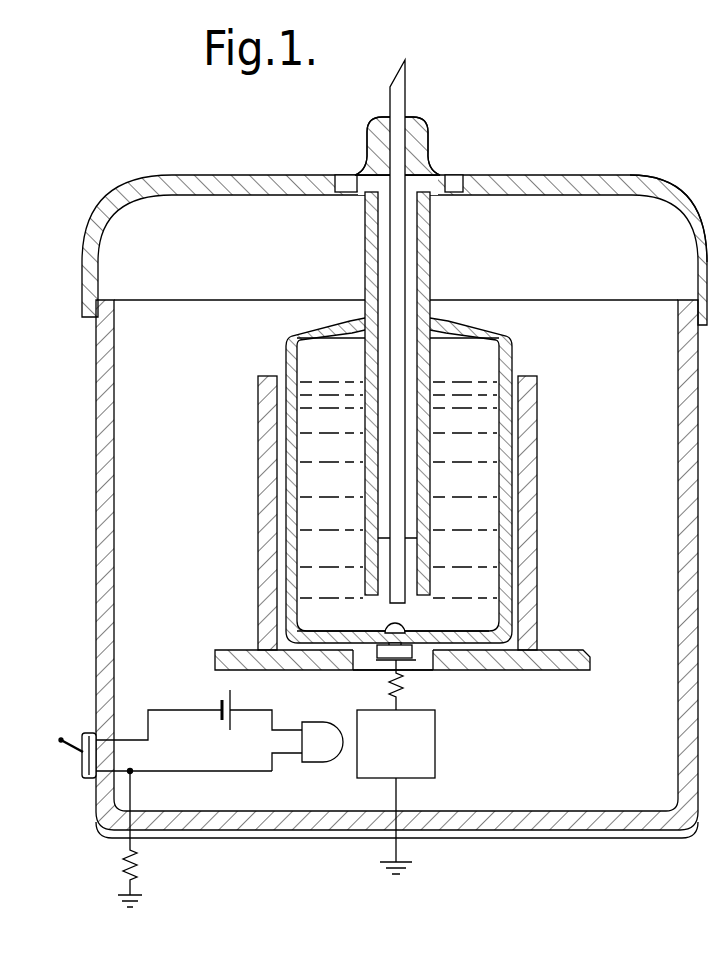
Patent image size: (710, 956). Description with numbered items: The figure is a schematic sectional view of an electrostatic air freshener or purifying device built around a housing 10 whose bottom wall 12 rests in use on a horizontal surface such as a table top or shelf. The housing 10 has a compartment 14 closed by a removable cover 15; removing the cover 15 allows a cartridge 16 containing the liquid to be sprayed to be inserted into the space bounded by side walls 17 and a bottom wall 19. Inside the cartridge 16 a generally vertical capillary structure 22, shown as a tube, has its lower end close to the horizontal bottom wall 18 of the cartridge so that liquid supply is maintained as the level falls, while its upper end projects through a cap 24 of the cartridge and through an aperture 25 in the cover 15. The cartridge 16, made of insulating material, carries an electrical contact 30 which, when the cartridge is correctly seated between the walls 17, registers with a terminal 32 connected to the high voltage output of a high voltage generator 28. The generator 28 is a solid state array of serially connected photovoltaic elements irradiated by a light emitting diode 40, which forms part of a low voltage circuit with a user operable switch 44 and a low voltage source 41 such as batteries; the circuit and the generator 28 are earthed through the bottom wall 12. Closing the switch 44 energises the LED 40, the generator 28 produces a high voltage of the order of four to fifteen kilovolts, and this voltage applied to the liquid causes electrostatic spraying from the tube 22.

The housing 10 is at (88, 485).
The bottom wall 12 is at (563, 817).
The compartment 14 is at (248, 226).
The cover 15 is at (618, 178).
The cartridge 16 is at (462, 318).
The side walls 17 is at (258, 518).
The bottom wall of the cartridge 18 is at (478, 626).
The bottom wall 19 is at (507, 660).
The capillary structure 22 is at (400, 89).
The cap 24 is at (420, 140).
The aperture 25 is at (456, 174).
The high voltage generator 28 is at (437, 752).
The electrical contact 30 is at (403, 625).
The terminal 32 is at (413, 659).
The light emitting diode 40 is at (320, 748).
The low voltage source 41 is at (220, 700).
The user operable switch 44 is at (78, 772).